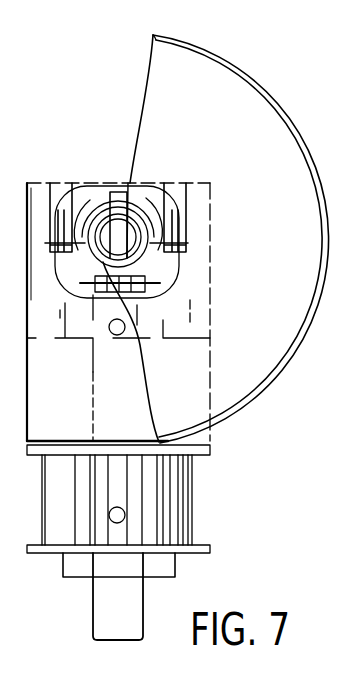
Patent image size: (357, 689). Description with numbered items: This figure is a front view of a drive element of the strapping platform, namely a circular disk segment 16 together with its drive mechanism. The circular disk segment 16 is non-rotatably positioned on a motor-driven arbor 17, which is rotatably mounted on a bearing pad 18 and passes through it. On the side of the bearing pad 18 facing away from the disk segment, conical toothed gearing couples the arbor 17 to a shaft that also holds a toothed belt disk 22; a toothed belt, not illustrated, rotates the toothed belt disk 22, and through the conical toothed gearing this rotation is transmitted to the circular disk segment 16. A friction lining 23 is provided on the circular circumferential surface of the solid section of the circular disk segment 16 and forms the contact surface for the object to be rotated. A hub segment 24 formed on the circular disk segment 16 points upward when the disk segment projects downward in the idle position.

The circular disk segment 16 is at (142, 96).
The arbor 17 is at (118, 215).
The bearing pad 18 is at (27, 441).
The toothed belt disk 22 is at (194, 523).
The friction lining 23 is at (253, 78).
The hub segment 24 is at (62, 280).